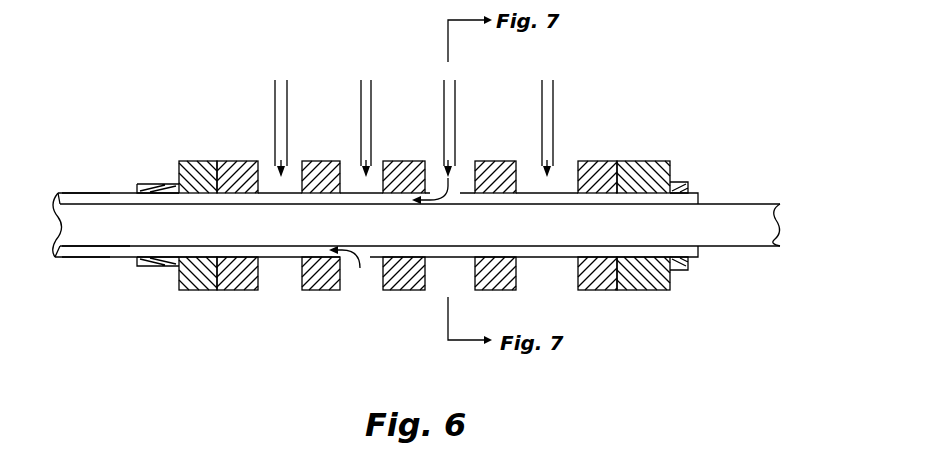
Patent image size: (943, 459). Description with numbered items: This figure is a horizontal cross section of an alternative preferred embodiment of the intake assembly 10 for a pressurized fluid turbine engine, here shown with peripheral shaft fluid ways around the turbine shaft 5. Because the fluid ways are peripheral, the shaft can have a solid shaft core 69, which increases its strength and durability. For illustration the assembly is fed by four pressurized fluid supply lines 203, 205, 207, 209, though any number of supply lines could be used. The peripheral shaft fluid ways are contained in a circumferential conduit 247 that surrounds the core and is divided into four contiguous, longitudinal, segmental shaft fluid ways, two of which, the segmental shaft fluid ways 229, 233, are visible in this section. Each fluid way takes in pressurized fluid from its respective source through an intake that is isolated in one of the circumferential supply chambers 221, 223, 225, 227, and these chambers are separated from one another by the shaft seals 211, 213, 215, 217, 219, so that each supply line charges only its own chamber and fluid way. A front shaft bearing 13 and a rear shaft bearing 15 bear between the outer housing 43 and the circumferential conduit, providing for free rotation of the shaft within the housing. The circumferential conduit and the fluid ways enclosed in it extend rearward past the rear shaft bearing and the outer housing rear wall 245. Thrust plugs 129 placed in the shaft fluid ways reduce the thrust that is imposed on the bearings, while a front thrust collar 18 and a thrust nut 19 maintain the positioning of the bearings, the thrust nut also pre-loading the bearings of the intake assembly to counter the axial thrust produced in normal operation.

The turbine shaft 5 is at (733, 207).
The intake assembly 10 is at (421, 138).
The front shaft bearing 13 is at (185, 146).
The rear shaft bearing 15 is at (652, 160).
The front thrust collar 18 is at (160, 265).
The thrust nut 19 is at (678, 272).
The outer housing 43 is at (223, 160).
The solid shaft core 69 is at (773, 202).
The thrust plugs 129 is at (705, 199).
The pressurized fluid supply line 203 is at (287, 110).
The pressurized fluid supply line 205 is at (371, 110).
The pressurized fluid supply line 207 is at (457, 110).
The pressurized fluid supply line 209 is at (553, 110).
The shaft seal 211 is at (247, 280).
The shaft seal 213 is at (333, 287).
The shaft seal 215 is at (418, 280).
The shaft seal 217 is at (505, 283).
The shaft seal 219 is at (608, 283).
The circumferential supply chamber 221 is at (267, 167).
The circumferential supply chamber 223 is at (357, 168).
The circumferential supply chamber 225 is at (440, 168).
The circumferential supply chamber 227 is at (535, 168).
The segmental shaft fluid way 229 is at (83, 253).
The segmental shaft fluid way 233 is at (80, 202).
The outer housing rear wall 245 is at (670, 178).
The circumferential conduit 247 is at (108, 250).